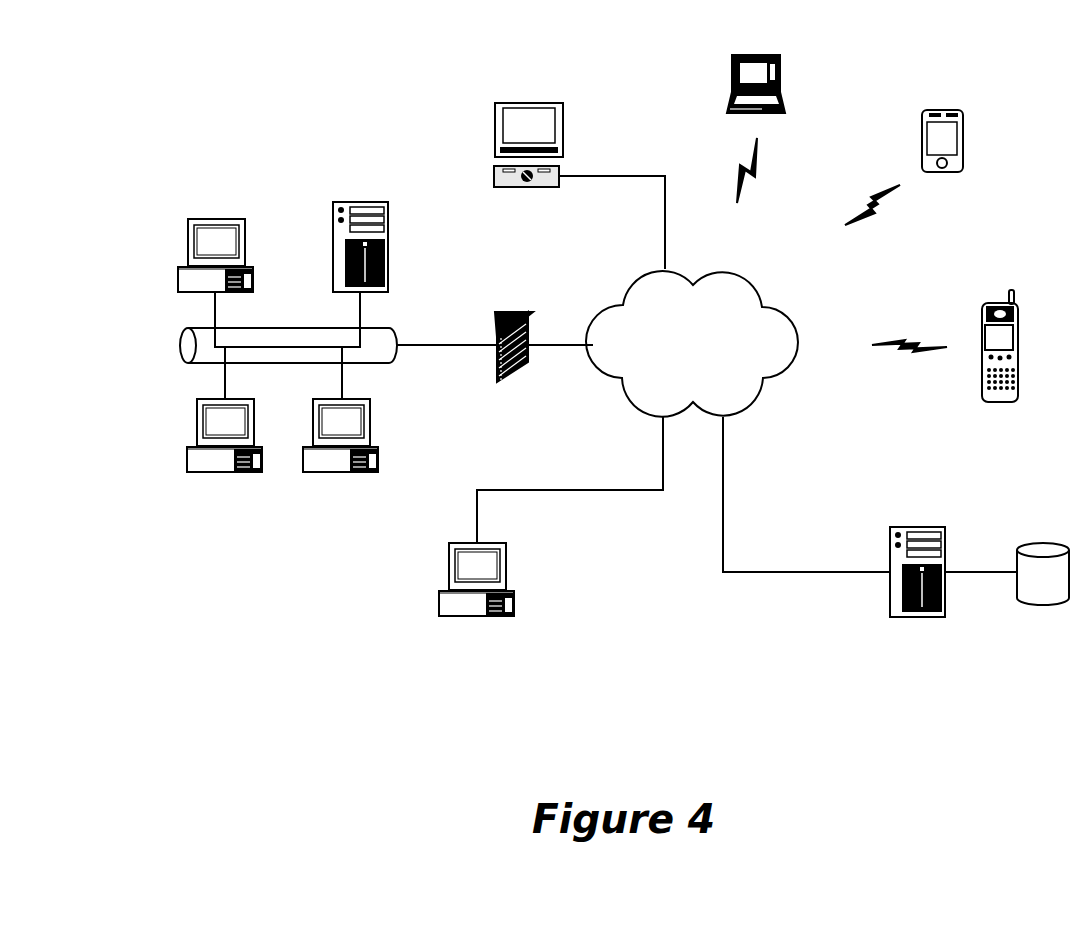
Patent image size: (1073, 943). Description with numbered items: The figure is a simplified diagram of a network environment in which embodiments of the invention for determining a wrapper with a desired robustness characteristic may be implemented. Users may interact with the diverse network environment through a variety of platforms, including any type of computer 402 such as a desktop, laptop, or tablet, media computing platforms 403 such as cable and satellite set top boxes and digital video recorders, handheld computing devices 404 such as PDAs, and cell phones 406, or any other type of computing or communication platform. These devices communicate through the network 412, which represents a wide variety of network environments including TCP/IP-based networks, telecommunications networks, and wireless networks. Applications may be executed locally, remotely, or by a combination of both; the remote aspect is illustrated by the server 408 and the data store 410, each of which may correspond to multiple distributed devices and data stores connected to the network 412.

The computer 402 is at (187, 245).
The media computing platform 403 is at (495, 172).
The handheld computing device 404 is at (927, 112).
The cell phone 406 is at (983, 305).
The server 408 is at (902, 526).
The data store 410 is at (1040, 543).
The network 412 is at (633, 285).